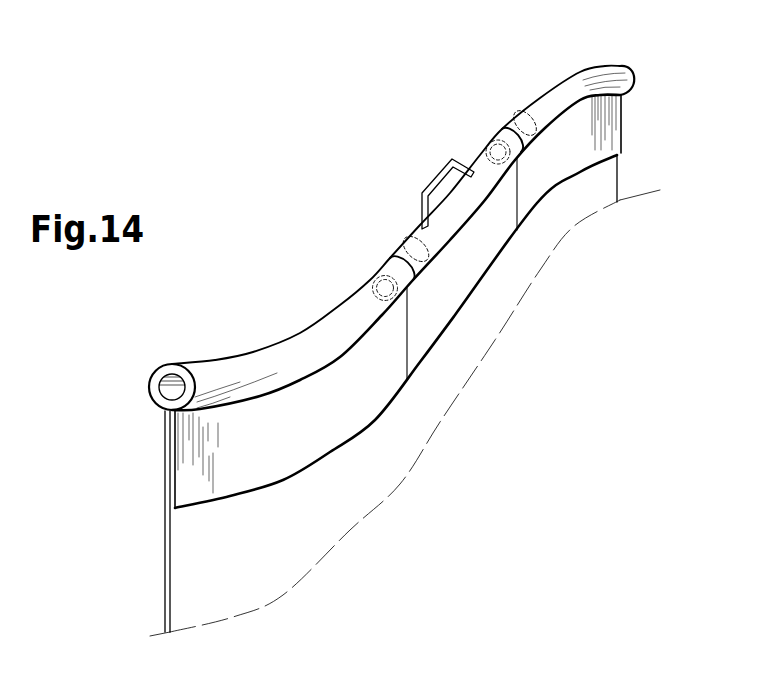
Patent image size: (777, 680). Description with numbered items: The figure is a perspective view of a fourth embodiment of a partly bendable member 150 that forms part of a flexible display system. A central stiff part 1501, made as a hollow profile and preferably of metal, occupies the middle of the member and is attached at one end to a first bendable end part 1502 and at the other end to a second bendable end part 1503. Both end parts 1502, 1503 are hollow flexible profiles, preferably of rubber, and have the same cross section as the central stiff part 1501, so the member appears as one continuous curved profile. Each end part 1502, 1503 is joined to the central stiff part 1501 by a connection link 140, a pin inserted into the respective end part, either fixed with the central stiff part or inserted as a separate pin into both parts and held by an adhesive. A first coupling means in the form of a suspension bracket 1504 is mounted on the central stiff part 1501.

The partly bendable member 150 is at (390, 158).
The connection link 140 is at (500, 128).
The central stiff part 1501 is at (415, 225).
The first bendable end part 1502 is at (253, 352).
The second bendable end part 1503 is at (612, 68).
The suspension bracket 1504 is at (448, 170).